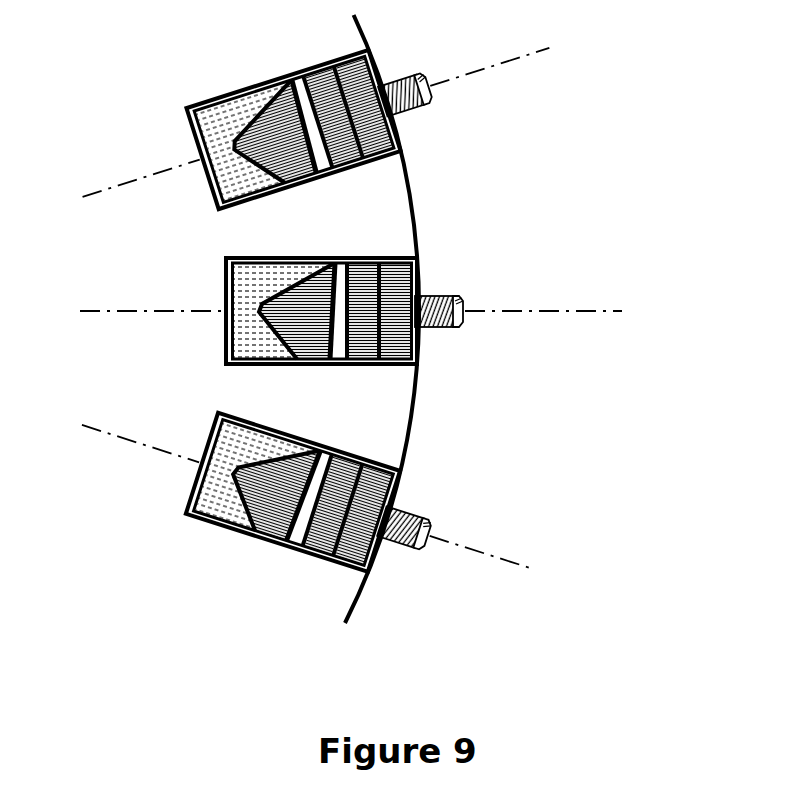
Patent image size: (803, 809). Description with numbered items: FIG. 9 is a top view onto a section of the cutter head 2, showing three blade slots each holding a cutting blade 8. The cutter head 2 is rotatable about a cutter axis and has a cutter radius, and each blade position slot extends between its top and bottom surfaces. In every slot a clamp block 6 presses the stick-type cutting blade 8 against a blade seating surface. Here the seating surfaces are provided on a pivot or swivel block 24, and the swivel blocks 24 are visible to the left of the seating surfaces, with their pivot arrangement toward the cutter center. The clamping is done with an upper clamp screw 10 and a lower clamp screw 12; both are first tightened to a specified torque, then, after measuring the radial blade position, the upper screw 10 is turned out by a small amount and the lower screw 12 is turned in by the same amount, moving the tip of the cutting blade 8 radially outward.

The cutter head 2 is at (365, 215).
The clamp block 6 is at (405, 273).
The cutting blade 8 is at (315, 318).
The swivel block 24 is at (245, 303).
The upper clamp screw 10 is at (535, 338).
The lower clamp screw 12 is at (437, 327).